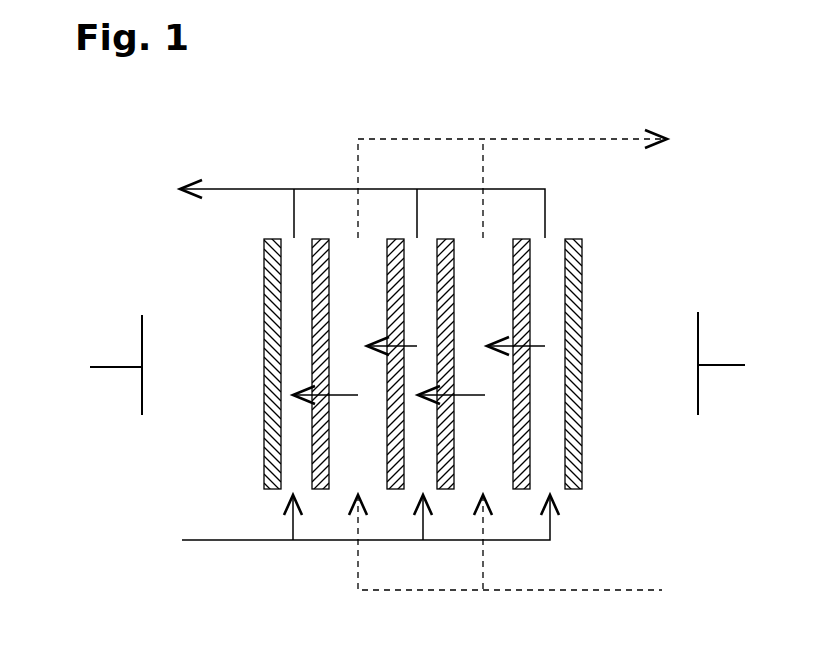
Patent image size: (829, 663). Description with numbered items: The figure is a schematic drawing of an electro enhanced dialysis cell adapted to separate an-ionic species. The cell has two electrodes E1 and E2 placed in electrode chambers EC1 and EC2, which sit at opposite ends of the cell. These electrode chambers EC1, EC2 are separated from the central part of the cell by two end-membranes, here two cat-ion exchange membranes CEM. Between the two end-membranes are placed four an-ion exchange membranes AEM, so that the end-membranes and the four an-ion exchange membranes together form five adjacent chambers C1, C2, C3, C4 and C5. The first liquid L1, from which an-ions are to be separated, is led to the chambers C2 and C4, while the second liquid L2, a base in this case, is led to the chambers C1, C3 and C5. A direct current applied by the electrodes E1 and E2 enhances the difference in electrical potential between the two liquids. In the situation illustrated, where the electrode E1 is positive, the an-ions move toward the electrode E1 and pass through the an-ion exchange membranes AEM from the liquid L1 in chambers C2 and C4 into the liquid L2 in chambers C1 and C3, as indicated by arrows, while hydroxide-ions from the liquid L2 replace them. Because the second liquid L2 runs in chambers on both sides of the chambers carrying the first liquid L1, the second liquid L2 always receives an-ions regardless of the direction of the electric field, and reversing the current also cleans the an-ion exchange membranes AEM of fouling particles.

The liquid L1 is at (535, 357).
The second liquid L2 is at (343, 361).
The cat-ion exchange membrane CEM is at (422, 358).
The an-ion exchange membrane AEM is at (418, 358).
The chamber C1 is at (320, 436).
The chamber C2 is at (391, 410).
The chamber C3 is at (445, 436).
The chamber C4 is at (515, 410).
The chamber C5 is at (545, 491).
The electrode E1 is at (97, 365).
The electrode E2 is at (743, 363).
The electrode chamber EC1 is at (191, 360).
The electrode chamber EC2 is at (651, 360).